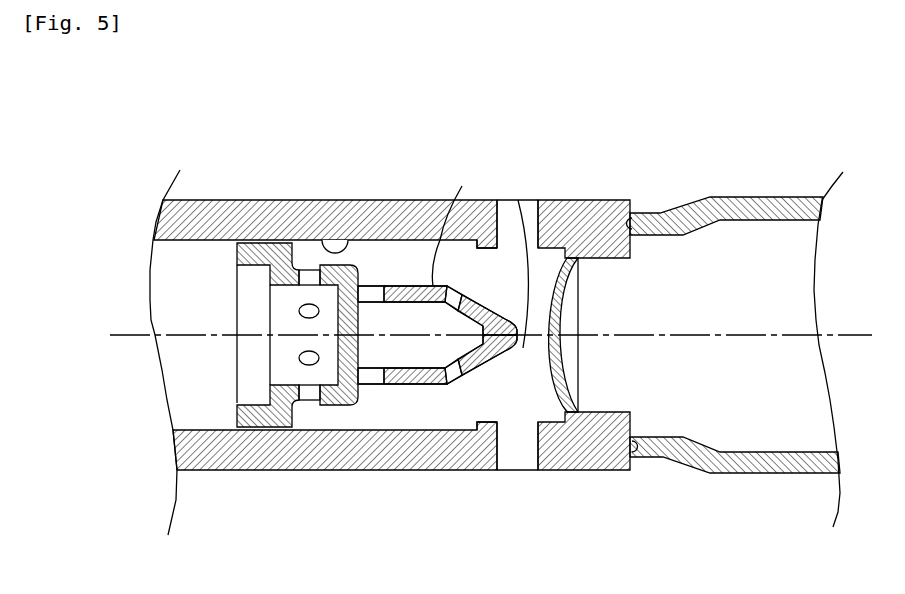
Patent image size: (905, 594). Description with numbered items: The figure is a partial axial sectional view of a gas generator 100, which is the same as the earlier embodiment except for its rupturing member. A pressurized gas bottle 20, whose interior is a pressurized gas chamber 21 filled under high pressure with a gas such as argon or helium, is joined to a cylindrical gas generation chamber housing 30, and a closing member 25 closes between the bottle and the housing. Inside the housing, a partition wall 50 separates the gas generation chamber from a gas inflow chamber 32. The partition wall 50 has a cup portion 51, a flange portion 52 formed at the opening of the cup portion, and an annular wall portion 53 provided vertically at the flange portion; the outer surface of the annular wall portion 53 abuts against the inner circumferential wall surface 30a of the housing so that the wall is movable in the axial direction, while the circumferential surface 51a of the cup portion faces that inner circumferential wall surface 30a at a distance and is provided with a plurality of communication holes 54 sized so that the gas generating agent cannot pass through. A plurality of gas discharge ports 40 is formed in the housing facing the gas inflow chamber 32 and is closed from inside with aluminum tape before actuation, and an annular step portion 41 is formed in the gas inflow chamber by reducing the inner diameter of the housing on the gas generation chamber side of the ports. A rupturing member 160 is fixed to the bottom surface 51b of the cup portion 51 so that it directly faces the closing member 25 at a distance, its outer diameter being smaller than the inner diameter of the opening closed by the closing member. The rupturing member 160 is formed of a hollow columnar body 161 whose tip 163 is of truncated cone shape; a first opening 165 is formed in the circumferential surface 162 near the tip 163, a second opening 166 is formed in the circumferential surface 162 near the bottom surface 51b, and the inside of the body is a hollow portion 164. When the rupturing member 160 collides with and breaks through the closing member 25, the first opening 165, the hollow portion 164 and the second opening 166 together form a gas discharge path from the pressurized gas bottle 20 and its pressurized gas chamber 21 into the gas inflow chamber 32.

The gas generator 100 is at (604, 161).
The pressurized gas bottle 20 is at (765, 197).
The pressurized gas chamber 21 is at (744, 299).
The closing member 25 is at (545, 390).
The gas generation chamber housing 30 is at (188, 200).
The inner circumferential wall surface 30a is at (351, 238).
The gas inflow chamber 32 is at (424, 280).
The gas discharge ports 40 is at (518, 457).
The annular step portion 41 is at (465, 433).
The partition wall 50 is at (252, 437).
The cup portion 51 is at (342, 421).
The circumferential surface 51a is at (345, 403).
The bottom surface 51b is at (368, 386).
The flange portion 52 is at (292, 255).
The annular wall portion 53 is at (239, 243).
The communication holes 54 is at (311, 308).
The rupturing member 160 is at (452, 331).
The hollow columnar body 161 is at (493, 224).
The circumferential surface 162 is at (463, 220).
The tip 163 is at (525, 251).
The hollow portion 164 is at (417, 355).
The first opening 165 is at (480, 283).
The second opening 166 is at (381, 286).